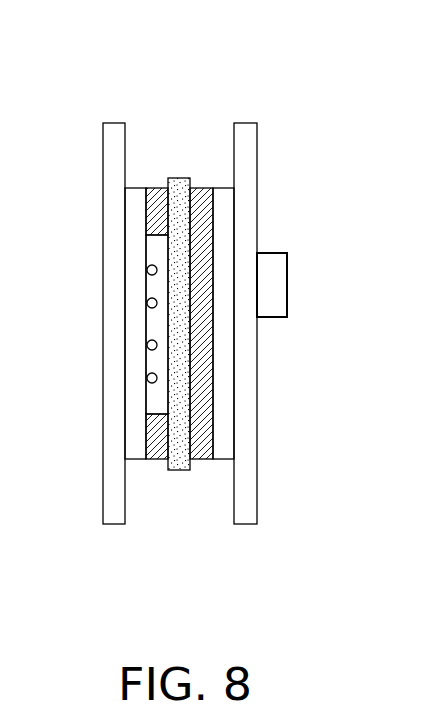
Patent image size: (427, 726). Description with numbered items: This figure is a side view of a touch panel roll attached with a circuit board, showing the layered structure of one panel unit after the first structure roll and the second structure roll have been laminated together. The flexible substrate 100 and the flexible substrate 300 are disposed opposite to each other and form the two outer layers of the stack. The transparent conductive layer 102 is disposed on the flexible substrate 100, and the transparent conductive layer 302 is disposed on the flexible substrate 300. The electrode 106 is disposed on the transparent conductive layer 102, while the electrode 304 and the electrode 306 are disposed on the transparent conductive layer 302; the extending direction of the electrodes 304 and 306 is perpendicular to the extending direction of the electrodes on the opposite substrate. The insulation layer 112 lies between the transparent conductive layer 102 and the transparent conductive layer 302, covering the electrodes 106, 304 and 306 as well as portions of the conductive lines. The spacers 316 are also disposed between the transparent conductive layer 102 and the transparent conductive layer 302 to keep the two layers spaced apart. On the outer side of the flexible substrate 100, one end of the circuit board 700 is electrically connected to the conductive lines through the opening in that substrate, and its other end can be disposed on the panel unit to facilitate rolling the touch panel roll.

The flexible substrate 100 is at (243, 523).
The transparent conductive layer 102 is at (223, 203).
The electrode 106 is at (198, 442).
The insulation layer 112 is at (178, 182).
The flexible substrate 300 is at (113, 523).
The transparent conductive layer 302 is at (138, 197).
The electrode 304 is at (158, 210).
The electrode 306 is at (163, 443).
The spacers 316 is at (148, 304).
The circuit board 700 is at (277, 283).